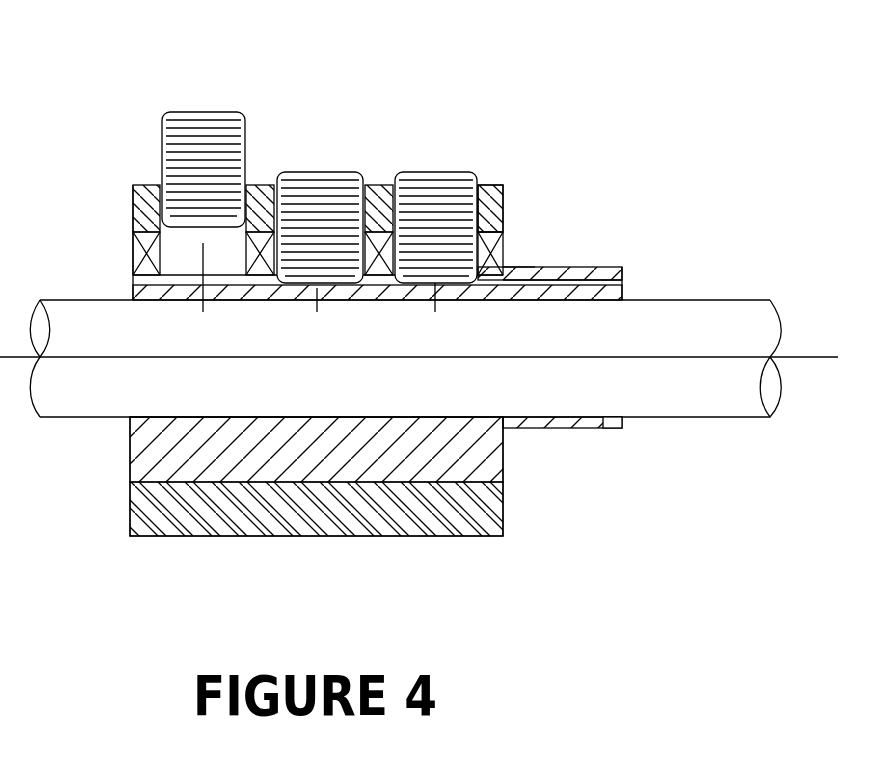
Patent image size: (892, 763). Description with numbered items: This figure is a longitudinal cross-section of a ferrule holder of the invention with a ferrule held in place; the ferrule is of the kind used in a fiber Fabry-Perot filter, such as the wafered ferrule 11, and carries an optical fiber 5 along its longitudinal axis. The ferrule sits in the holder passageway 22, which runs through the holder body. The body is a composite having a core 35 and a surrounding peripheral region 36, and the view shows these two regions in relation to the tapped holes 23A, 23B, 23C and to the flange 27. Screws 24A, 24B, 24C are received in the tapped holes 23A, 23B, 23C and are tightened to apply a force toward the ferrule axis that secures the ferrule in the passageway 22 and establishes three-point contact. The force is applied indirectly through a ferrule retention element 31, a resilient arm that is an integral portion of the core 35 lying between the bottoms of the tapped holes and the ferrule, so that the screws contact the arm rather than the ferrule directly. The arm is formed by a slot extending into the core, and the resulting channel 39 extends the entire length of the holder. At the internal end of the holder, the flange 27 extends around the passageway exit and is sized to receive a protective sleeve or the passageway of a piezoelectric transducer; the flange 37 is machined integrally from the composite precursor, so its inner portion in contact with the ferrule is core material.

The optical fiber 5 is at (838, 357).
The wafered ferrule 11 is at (737, 417).
The holder passageway 22 is at (455, 418).
The tapped hole 23A is at (185, 254).
The tapped hole 23B is at (363, 187).
The tapped hole 23C is at (487, 187).
The screw 24A is at (205, 112).
The screw 24B is at (327, 172).
The screw 24C is at (437, 172).
The flange 27 is at (605, 267).
The ferrule retention element 31 is at (133, 292).
The core 35 is at (130, 452).
The peripheral region 36 is at (130, 527).
The flange 37 is at (603, 428).
The channel 39 is at (510, 265).